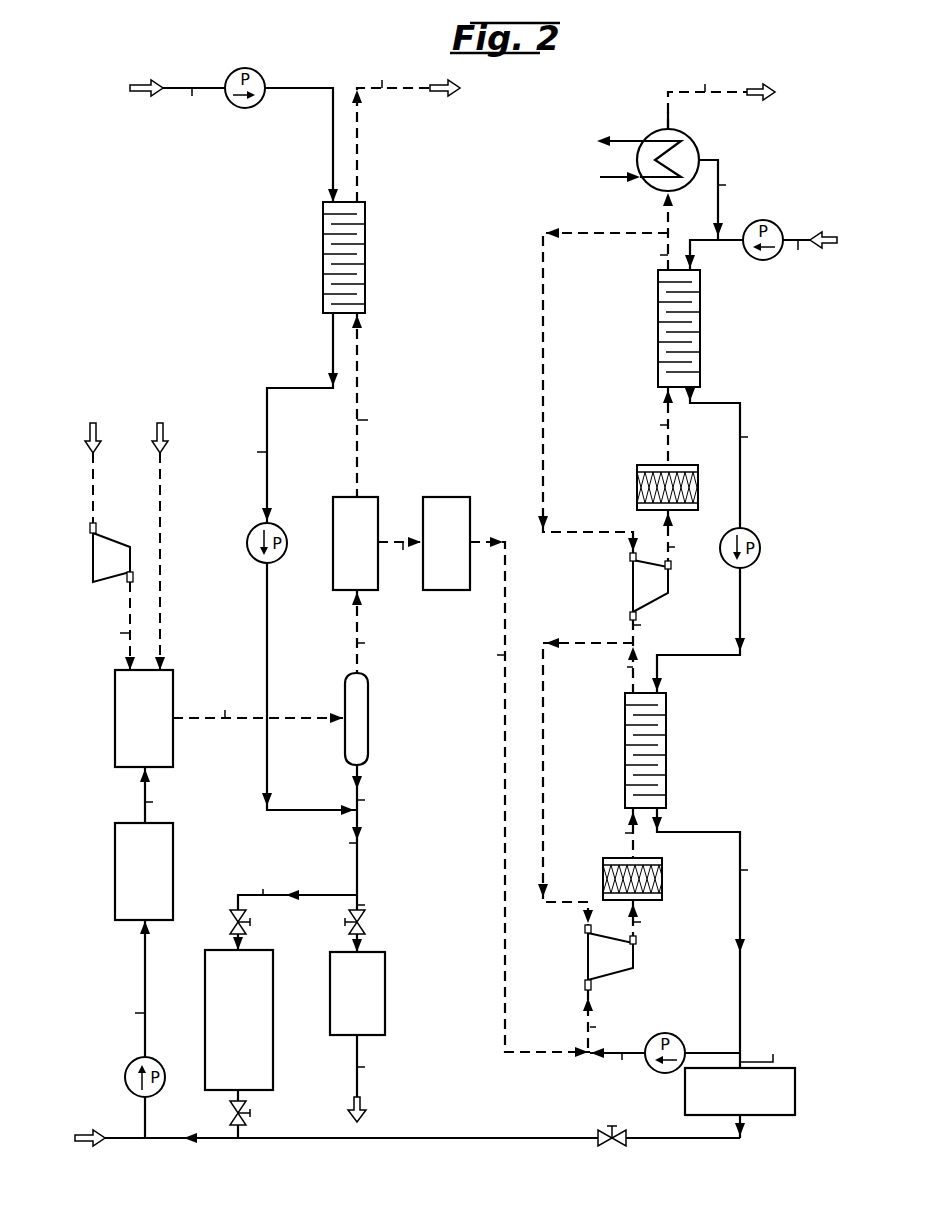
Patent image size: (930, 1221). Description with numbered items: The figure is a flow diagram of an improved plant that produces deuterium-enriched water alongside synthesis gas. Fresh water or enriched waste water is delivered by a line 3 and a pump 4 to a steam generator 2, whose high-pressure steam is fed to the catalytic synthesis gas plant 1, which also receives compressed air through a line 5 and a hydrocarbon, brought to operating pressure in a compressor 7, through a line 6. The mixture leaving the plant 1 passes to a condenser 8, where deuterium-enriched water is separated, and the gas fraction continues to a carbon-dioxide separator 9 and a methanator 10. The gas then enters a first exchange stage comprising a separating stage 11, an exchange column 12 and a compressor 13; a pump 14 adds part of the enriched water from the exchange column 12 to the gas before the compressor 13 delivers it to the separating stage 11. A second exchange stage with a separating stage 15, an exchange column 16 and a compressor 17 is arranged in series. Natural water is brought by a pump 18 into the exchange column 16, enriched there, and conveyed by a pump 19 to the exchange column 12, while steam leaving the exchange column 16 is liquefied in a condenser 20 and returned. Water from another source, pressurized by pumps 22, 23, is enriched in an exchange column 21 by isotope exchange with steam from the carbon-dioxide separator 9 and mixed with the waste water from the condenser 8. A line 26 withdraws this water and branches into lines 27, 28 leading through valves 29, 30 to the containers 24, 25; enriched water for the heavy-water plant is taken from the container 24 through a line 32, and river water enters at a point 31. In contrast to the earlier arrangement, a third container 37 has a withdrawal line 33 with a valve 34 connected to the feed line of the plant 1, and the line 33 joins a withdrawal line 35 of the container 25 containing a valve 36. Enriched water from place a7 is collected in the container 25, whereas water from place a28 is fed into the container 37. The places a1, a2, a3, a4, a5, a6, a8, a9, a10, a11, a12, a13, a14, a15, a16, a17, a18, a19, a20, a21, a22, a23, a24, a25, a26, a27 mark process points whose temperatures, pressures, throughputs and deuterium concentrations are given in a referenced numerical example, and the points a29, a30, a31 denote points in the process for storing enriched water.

The catalytic synthesis gas plant 1 is at (120, 700).
The steam generator 2 is at (120, 865).
The line 3 is at (147, 1035).
The pump 4 is at (125, 1078).
The line 5 is at (162, 527).
The line 6 is at (125, 590).
The compressor 7 is at (108, 540).
The condenser 8 is at (368, 716).
The carbon-dioxide separator 9 is at (358, 497).
The methanator 10 is at (455, 497).
The separating stage 11 is at (663, 880).
The exchange column 12 is at (666, 751).
The compressor 13 is at (640, 962).
The pump 14 is at (677, 1040).
The separating stage 15 is at (637, 489).
The exchange column 16 is at (700, 336).
The compressor 17 is at (671, 595).
The pump 18 is at (772, 222).
The pump 19 is at (762, 550).
The condenser 20 is at (697, 143).
The exchange column 21 is at (365, 262).
The pump 22 is at (258, 70).
The pump 23 is at (247, 540).
The container 24 is at (386, 1002).
The storage container 25 is at (274, 997).
The line 26 is at (368, 766).
The line 27 is at (355, 902).
The line 28 is at (308, 897).
The valve 29 is at (366, 930).
The valve 30 is at (231, 922).
The point 31 is at (118, 1136).
The line 32 is at (357, 1058).
The withdrawal line 33 is at (490, 1138).
The valve 34 is at (604, 1130).
The withdrawal line 35 is at (246, 1135).
The valve 36 is at (231, 1112).
The third container 37 is at (760, 1108).
The place a1 is at (123, 1013).
The place a2 is at (166, 802).
The place a3 is at (108, 633).
The place a4 is at (225, 697).
The place a5 is at (378, 643).
The place a6 is at (378, 800).
The place a7 is at (336, 843).
The place a8 is at (379, 420).
The place a9 is at (382, 67).
The place a10 is at (192, 109).
The place a11 is at (245, 452).
The place a12 is at (403, 563).
The place a13 is at (484, 655).
The place a14 is at (610, 1027).
The place a15 is at (654, 922).
The place a16 is at (612, 833).
The place a17 is at (613, 667).
The place a18 is at (654, 625).
The place a19 is at (688, 547).
The place a20 is at (647, 425).
The place a21 is at (647, 255).
The place a22 is at (705, 71).
The place a23 is at (739, 185).
The place a24 is at (798, 262).
The place a25 is at (761, 437).
The place a26 is at (761, 870).
The place a27 is at (622, 1073).
The place a28 is at (765, 1041).
The point a29 is at (263, 875).
The point a30 is at (378, 905).
The point a31 is at (378, 1067).